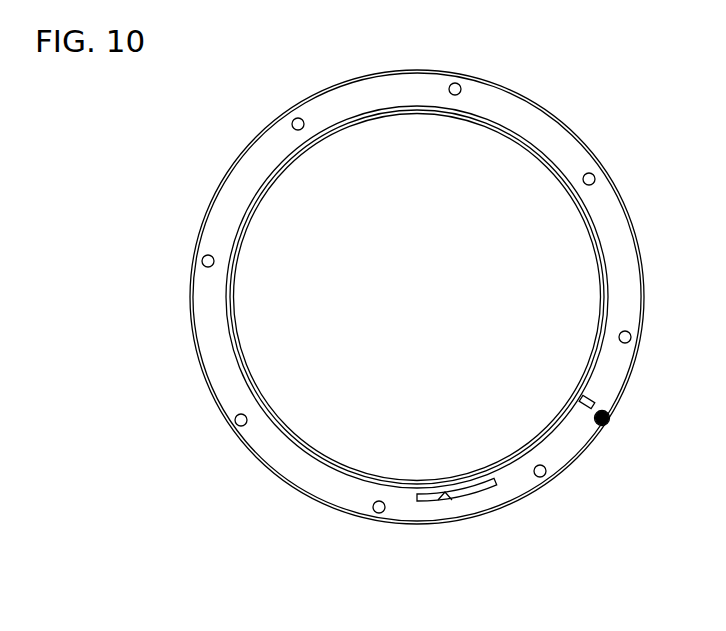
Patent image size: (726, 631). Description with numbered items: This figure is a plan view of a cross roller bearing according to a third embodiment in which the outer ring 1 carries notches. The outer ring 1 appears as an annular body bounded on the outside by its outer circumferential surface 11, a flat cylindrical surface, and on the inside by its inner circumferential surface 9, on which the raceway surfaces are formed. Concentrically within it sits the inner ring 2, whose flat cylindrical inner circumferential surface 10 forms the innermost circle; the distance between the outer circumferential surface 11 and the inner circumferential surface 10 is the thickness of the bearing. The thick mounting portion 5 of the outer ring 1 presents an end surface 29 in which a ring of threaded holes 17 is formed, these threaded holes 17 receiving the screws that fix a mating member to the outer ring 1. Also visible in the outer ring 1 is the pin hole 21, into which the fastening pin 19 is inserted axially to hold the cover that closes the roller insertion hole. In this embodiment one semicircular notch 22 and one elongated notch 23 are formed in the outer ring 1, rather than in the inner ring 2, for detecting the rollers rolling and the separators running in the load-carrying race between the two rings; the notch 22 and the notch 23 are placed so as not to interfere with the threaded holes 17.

The outer ring 1 is at (300, 477).
The inner ring 2 is at (273, 428).
The mounting portion 5 is at (516, 492).
The inner circumferential surface 9 is at (547, 150).
The inner circumferential surface 10 is at (257, 202).
The outer circumferential surface 11 is at (355, 78).
The threaded holes 17 is at (458, 85).
The fastening pin 19 is at (603, 428).
The pin hole 21 is at (610, 418).
The semicircular notch 22 is at (588, 405).
The elongated notch 23 is at (441, 500).
The end surface 29 is at (578, 160).